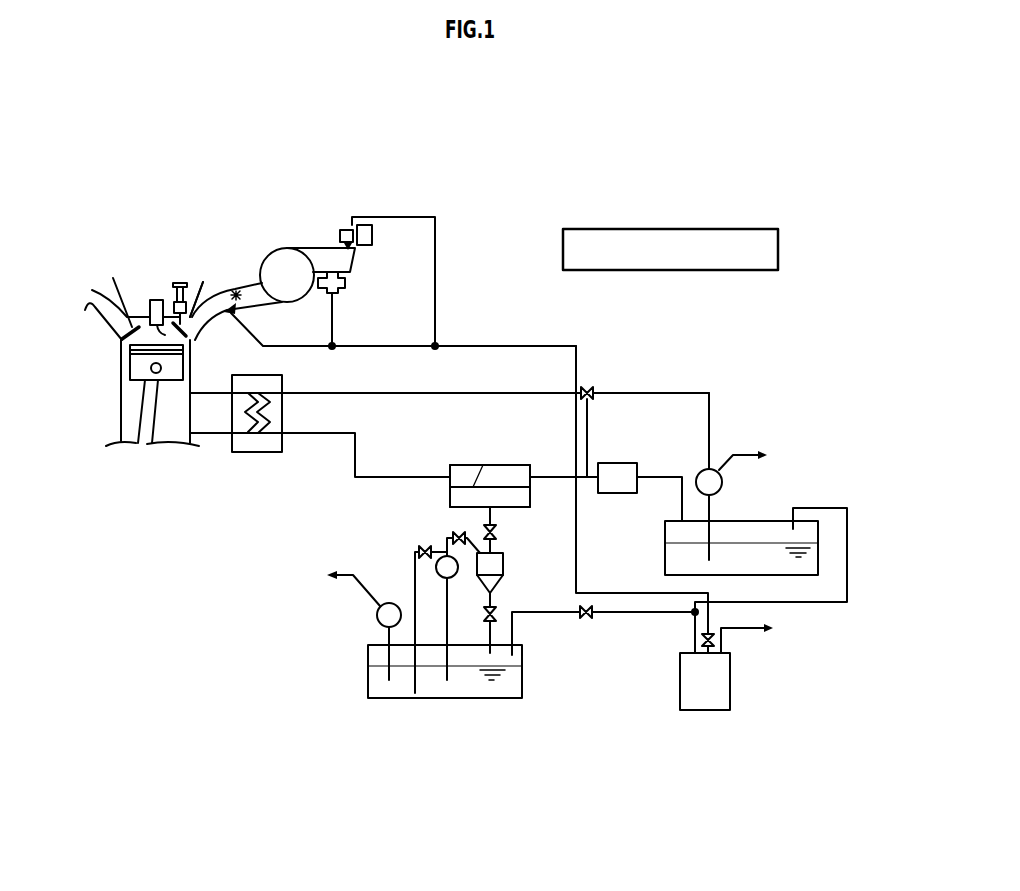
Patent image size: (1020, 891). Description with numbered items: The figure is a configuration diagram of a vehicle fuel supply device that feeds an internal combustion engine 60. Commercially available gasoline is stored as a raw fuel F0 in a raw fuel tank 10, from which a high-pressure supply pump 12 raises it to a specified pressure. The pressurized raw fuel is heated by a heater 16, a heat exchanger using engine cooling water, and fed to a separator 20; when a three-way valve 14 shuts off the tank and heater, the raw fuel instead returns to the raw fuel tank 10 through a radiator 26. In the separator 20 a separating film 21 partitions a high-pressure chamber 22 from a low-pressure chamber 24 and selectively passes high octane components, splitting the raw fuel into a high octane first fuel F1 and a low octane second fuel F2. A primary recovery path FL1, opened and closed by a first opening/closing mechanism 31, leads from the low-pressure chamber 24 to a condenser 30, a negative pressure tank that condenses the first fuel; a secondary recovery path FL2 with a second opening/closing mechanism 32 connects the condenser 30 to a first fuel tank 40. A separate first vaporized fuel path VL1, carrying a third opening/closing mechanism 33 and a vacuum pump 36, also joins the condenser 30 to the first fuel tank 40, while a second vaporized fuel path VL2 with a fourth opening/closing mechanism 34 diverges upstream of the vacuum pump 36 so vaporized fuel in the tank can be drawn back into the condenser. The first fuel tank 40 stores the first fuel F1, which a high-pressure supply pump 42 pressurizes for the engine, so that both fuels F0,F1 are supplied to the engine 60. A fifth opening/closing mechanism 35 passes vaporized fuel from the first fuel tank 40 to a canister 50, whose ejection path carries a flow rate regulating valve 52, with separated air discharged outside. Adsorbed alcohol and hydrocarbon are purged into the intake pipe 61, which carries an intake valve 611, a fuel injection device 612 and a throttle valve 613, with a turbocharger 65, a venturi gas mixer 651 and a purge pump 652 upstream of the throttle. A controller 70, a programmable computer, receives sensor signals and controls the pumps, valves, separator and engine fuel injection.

The internal combustion engine 60 is at (87, 260).
The intake pipe 61 is at (208, 324).
The intake valve 611 is at (201, 282).
The fuel injection device 612 is at (173, 290).
The throttle valve 613 is at (240, 291).
The turbocharger 65 is at (286, 258).
The venturi gas mixer 651 is at (345, 283).
The purge pump 652 is at (372, 246).
The controller 70 is at (740, 229).
The heater 16 is at (257, 453).
The three-way valve 14 is at (590, 384).
The separator 20 is at (458, 465).
The separating film 21 is at (483, 465).
The high-pressure chamber 22 is at (515, 464).
The low-pressure chamber 24 is at (450, 495).
The radiator 26 is at (615, 462).
The high-pressure supply pump 12 is at (723, 480).
The raw fuel tank 10 is at (738, 520).
The condenser 30 is at (503, 553).
The first opening/closing mechanism 31 is at (485, 530).
The second opening/closing mechanism 32 is at (494, 607).
The third opening/closing mechanism 33 is at (453, 536).
The fourth opening/closing mechanism 34 is at (418, 548).
The fifth opening/closing mechanism 35 is at (588, 622).
The vacuum pump 36 is at (436, 567).
The first fuel tank 40 is at (397, 700).
The high-pressure supply pump 42 is at (377, 615).
The canister 50 is at (715, 712).
The flow rate regulating valve 52 is at (712, 632).
The raw fuel F0 is at (818, 562).
The first fuel F1 is at (497, 697).
The second fuel F2 is at (555, 470).
The primary recovery path FL1 is at (495, 519).
The secondary recovery path FL2 is at (493, 598).
The first vaporized fuel path VL1 is at (447, 590).
The second vaporized fuel path VL2 is at (413, 598).
The raw fuel and first fuel F0,F1 is at (180, 270).